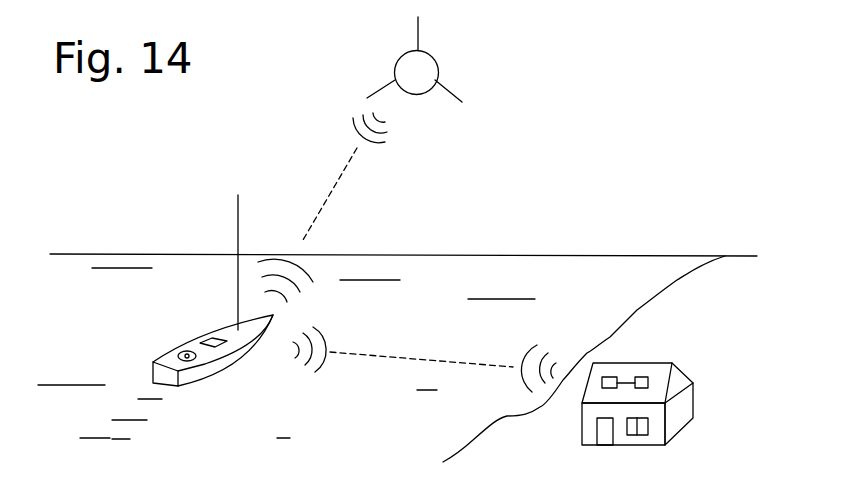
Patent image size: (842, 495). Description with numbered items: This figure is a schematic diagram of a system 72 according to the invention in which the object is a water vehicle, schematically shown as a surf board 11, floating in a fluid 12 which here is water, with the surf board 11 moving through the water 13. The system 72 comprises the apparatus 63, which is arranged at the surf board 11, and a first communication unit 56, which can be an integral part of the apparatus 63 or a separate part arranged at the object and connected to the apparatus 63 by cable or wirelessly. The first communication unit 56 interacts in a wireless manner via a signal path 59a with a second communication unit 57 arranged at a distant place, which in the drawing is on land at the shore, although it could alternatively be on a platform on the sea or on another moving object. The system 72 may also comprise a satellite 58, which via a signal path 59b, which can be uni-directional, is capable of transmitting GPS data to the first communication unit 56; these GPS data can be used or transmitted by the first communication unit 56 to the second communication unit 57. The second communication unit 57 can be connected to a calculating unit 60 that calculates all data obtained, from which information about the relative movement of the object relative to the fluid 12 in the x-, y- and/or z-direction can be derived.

The surf board 11 is at (190, 375).
The fluid 12 is at (75, 305).
The water 13 is at (70, 350).
The first communication unit 56 is at (207, 336).
The second communication unit 57 is at (610, 377).
The satellite 58 is at (425, 68).
The signal path 59a is at (463, 365).
The signal path 59b is at (335, 183).
The calculating unit 60 is at (648, 383).
The apparatus 63 is at (173, 340).
The system 72 is at (457, 242).